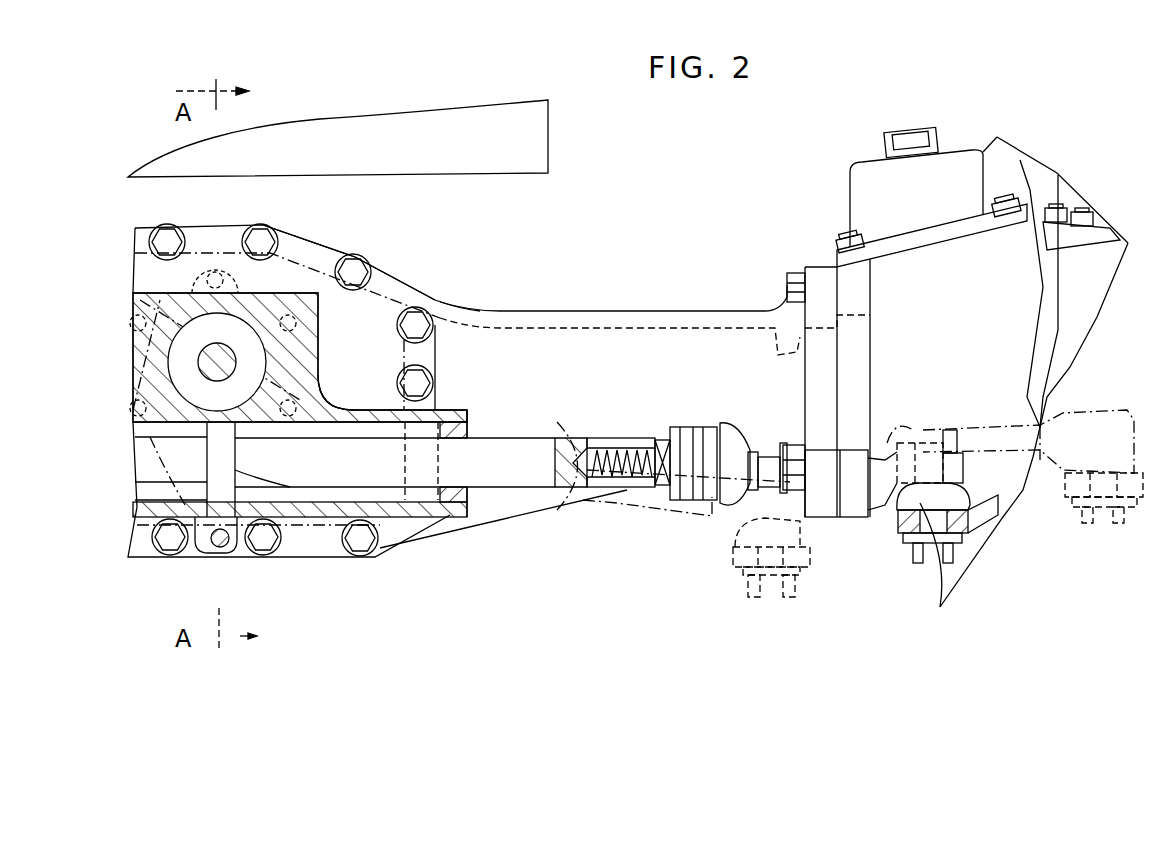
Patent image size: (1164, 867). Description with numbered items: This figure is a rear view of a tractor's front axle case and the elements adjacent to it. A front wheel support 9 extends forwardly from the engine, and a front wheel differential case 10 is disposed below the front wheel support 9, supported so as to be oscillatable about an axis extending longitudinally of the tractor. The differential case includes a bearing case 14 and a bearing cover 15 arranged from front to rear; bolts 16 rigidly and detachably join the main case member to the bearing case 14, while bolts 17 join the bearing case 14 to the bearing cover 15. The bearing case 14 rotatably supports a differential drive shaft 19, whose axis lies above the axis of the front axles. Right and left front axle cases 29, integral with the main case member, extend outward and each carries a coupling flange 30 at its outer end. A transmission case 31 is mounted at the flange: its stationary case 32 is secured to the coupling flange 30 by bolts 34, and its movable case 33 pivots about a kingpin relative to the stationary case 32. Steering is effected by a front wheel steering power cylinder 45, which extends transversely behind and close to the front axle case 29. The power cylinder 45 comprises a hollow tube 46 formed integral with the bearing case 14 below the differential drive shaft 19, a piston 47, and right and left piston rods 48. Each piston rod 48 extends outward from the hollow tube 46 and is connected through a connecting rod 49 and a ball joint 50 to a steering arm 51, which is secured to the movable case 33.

The front wheel support 9 is at (546, 139).
The front wheel differential case 10 is at (333, 231).
The bearing case 14 is at (368, 313).
The bearing cover 15 is at (312, 380).
The bolts 16 is at (420, 328).
The bolts 17 is at (223, 548).
The differential drive shaft 19 is at (226, 343).
The front axle case 29 is at (655, 347).
The coupling flange 30 is at (822, 285).
The transmission case 31 is at (1084, 361).
The stationary case 32 is at (1000, 270).
The movable case 33 is at (1098, 290).
The bolts 34 is at (790, 280).
The front wheel steering power cylinder 45 is at (499, 500).
The hollow tube 46 is at (452, 515).
The piston 47 is at (223, 493).
The piston rod 48 is at (185, 463).
The connecting rod 49 is at (853, 482).
The ball joint 50 is at (957, 495).
The steering arm 51 is at (987, 517).